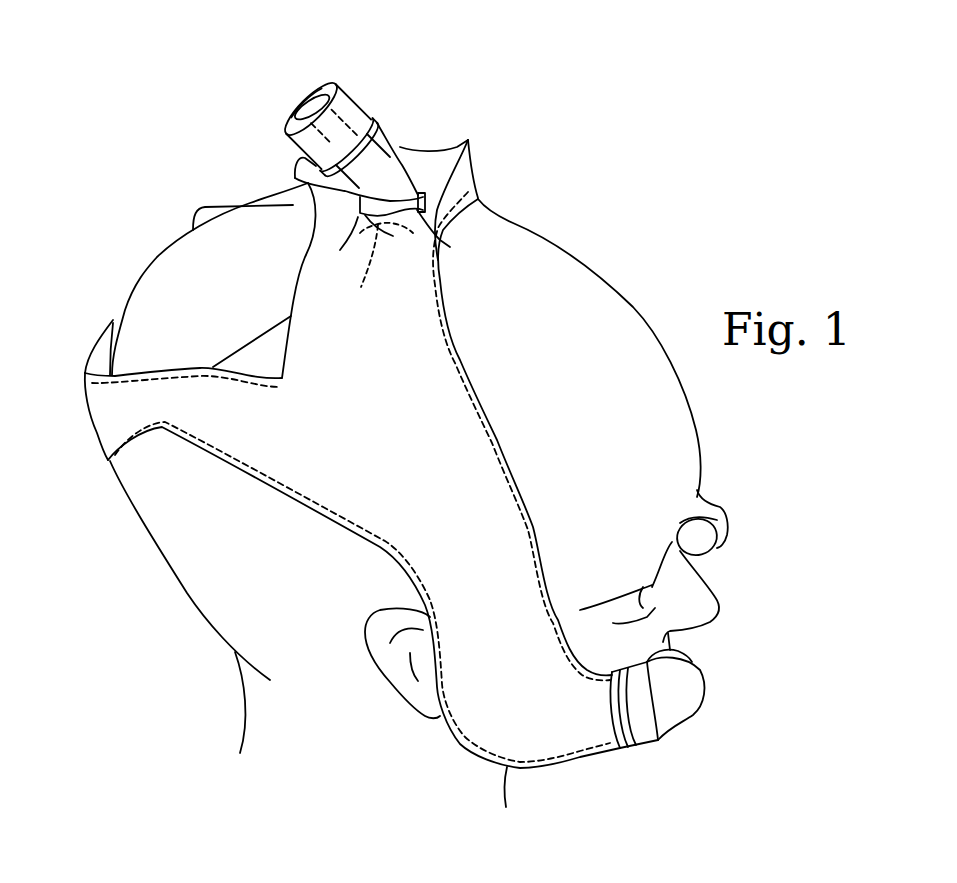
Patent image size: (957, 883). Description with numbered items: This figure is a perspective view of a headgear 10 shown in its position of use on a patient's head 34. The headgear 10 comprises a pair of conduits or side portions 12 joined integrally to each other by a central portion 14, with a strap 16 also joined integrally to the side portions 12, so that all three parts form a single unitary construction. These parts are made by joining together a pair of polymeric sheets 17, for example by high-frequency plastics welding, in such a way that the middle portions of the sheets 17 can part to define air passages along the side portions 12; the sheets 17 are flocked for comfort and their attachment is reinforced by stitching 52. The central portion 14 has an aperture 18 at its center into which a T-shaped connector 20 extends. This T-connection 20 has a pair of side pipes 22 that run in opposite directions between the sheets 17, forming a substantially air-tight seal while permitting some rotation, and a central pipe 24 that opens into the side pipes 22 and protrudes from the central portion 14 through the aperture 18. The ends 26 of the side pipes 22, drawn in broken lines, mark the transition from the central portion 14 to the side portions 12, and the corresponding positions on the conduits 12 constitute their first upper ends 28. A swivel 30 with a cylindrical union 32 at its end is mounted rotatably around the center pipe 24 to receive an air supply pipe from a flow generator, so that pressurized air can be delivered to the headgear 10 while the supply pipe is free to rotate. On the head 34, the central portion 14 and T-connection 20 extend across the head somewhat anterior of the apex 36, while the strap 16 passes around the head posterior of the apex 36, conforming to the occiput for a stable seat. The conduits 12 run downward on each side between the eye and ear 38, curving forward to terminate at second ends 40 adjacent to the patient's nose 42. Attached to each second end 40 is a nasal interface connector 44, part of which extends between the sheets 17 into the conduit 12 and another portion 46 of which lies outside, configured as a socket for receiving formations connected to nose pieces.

The headgear 10 is at (516, 192).
The side portions 12 is at (700, 498).
The central portion 14 is at (318, 260).
The strap 16 is at (105, 418).
The polymeric sheets 17 is at (95, 357).
The aperture 18 is at (422, 192).
The T-shaped connector 20 is at (363, 164).
The side pipes 22 is at (417, 227).
The central pipe 24 is at (306, 178).
The ends of the side pipes 26 is at (381, 271).
The first upper ends 28 is at (405, 237).
The swivel 30 is at (289, 96).
The cylindrical union 32 is at (312, 107).
The patient's head 34 is at (590, 287).
The apex 36 is at (290, 204).
The ear 38 is at (368, 652).
The second ends 40 is at (673, 710).
The nose 42 is at (712, 602).
The nasal interface connector 44 is at (745, 517).
The socket portion 46 is at (717, 548).
The stitching 52 is at (512, 478).